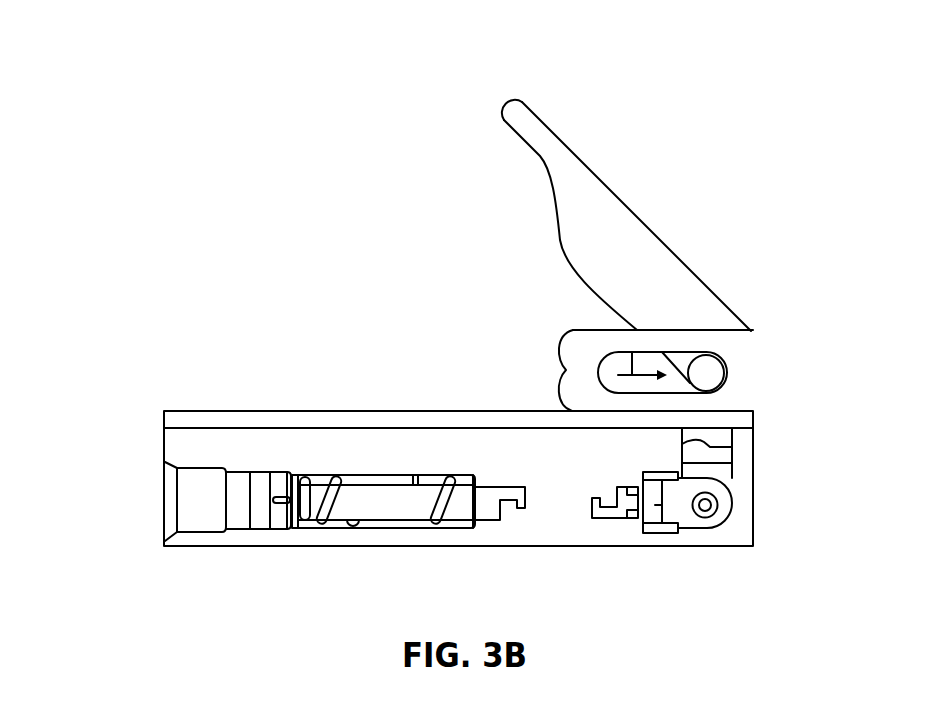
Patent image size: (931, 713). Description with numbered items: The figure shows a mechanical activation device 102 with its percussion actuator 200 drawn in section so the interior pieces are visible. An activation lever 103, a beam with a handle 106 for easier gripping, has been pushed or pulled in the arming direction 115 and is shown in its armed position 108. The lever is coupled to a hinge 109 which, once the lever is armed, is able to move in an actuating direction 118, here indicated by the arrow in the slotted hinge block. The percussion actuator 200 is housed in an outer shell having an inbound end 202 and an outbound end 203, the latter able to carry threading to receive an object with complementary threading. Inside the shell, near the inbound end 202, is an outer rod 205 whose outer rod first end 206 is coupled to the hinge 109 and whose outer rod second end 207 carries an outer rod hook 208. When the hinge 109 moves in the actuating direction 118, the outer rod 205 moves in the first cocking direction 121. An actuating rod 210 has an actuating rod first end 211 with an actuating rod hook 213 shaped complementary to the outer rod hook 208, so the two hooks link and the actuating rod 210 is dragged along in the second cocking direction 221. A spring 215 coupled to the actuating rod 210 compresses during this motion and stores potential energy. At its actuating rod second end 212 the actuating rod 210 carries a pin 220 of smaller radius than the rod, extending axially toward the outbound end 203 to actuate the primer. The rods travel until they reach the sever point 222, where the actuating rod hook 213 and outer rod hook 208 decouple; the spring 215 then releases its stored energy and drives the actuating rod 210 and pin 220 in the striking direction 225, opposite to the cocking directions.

The mechanical activation device 102 is at (145, 204).
The armed position 108 is at (533, 81).
The handle 106 is at (559, 141).
The activation lever 103 is at (627, 233).
The actuating direction 118 is at (632, 352).
The hinge 109 is at (710, 365).
The arming direction 115 is at (463, 240).
The percussion actuator 200 is at (145, 457).
The inbound end 202 is at (753, 522).
The outbound end 203 is at (189, 546).
The pin 220 is at (283, 503).
The actuating rod second end 212 is at (308, 502).
The actuating rod 210 is at (382, 502).
The spring 215 is at (437, 510).
The actuating rod first end 211 is at (457, 503).
The actuating rod hook 213 is at (488, 503).
The striking direction 225 is at (418, 453).
The second cocking direction 221 is at (502, 453).
The first cocking direction 121 is at (660, 455).
The sever point 222 is at (557, 514).
The outer rod hook 208 is at (605, 508).
The outer rod second end 207 is at (658, 505).
The outer rod 205 is at (707, 522).
The outer rod first end 206 is at (722, 505).